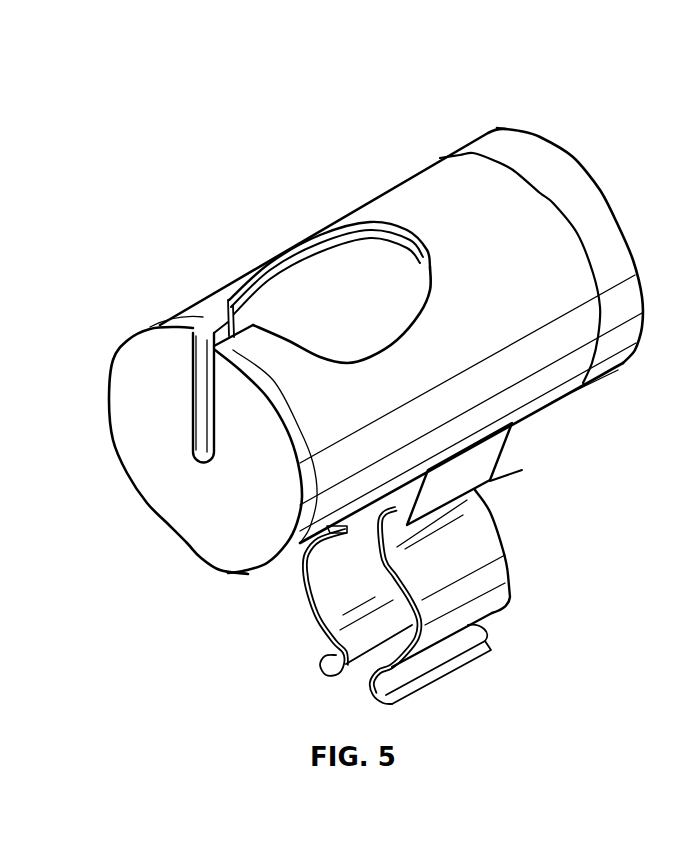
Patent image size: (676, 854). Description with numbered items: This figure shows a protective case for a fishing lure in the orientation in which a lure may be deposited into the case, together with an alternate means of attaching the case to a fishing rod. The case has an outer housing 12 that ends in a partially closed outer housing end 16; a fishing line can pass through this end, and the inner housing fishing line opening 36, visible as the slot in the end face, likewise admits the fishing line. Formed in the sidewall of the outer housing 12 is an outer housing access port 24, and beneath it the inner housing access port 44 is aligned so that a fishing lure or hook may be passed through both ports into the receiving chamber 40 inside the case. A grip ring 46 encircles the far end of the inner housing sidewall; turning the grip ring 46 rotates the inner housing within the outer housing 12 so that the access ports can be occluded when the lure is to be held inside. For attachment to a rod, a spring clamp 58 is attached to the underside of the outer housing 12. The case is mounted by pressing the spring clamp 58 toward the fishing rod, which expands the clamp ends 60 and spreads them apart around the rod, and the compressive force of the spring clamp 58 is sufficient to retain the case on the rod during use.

The outer housing 12 is at (382, 169).
The outer housing end 16 is at (224, 532).
The outer housing access port 24 is at (325, 230).
The inner housing fishing line opening 36 is at (223, 297).
The receiving chamber 40 is at (410, 270).
The inner housing access port 44 is at (323, 250).
The grip ring 46 is at (593, 217).
The spring clamp 58 is at (490, 560).
The clamp ends 60 is at (427, 687).